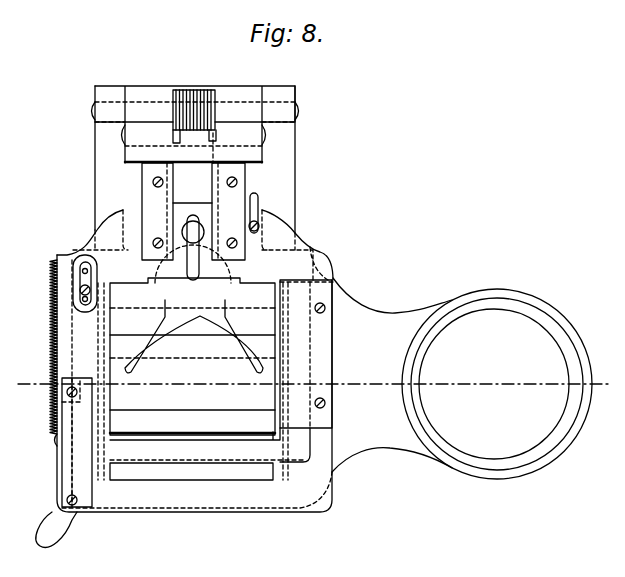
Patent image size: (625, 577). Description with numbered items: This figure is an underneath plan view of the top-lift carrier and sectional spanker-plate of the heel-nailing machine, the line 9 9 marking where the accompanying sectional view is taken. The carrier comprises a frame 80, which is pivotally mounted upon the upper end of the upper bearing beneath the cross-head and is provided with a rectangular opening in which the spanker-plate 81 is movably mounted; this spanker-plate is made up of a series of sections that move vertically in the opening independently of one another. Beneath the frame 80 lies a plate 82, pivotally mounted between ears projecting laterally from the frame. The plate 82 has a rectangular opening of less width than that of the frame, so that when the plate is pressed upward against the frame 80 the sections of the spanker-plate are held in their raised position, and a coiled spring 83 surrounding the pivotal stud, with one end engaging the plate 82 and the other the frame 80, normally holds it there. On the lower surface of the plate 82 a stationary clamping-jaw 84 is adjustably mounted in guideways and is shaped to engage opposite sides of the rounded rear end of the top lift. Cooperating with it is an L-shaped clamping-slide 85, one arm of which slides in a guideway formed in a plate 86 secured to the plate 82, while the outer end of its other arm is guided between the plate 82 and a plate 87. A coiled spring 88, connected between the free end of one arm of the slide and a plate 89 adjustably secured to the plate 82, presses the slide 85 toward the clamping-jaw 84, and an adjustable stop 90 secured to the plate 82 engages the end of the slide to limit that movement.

The frame 80 is at (357, 306).
The spanker-plate 81 is at (192, 356).
The plate 82 is at (326, 496).
The coiled spring 83 is at (195, 92).
The stationary clamping-jaw 84 is at (212, 286).
The L-shaped clamping-slide 85 is at (204, 452).
The plate 86 is at (326, 342).
The plate 87 is at (62, 468).
The coiled spring 88 is at (50, 294).
The plate 89 is at (87, 254).
The adjustable stop 90 is at (283, 234).
The section line 9 is at (312, 385).